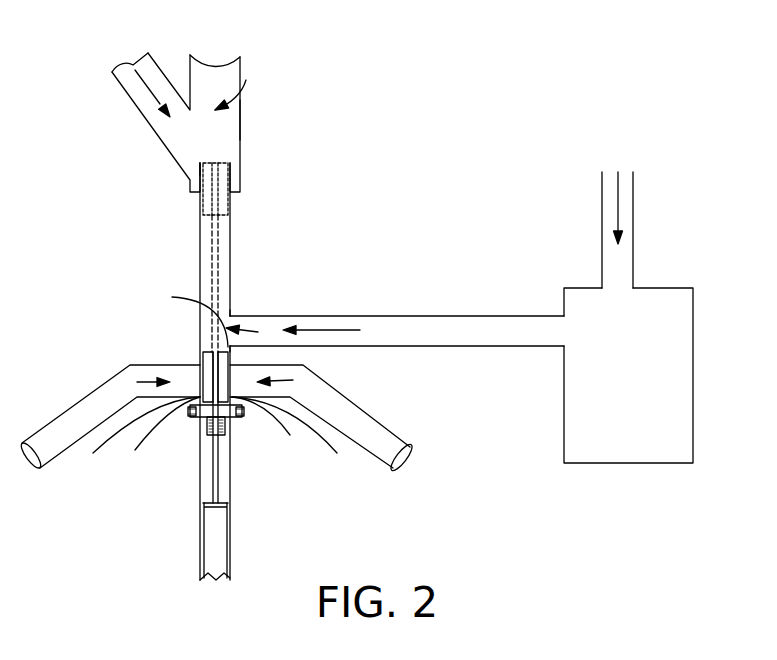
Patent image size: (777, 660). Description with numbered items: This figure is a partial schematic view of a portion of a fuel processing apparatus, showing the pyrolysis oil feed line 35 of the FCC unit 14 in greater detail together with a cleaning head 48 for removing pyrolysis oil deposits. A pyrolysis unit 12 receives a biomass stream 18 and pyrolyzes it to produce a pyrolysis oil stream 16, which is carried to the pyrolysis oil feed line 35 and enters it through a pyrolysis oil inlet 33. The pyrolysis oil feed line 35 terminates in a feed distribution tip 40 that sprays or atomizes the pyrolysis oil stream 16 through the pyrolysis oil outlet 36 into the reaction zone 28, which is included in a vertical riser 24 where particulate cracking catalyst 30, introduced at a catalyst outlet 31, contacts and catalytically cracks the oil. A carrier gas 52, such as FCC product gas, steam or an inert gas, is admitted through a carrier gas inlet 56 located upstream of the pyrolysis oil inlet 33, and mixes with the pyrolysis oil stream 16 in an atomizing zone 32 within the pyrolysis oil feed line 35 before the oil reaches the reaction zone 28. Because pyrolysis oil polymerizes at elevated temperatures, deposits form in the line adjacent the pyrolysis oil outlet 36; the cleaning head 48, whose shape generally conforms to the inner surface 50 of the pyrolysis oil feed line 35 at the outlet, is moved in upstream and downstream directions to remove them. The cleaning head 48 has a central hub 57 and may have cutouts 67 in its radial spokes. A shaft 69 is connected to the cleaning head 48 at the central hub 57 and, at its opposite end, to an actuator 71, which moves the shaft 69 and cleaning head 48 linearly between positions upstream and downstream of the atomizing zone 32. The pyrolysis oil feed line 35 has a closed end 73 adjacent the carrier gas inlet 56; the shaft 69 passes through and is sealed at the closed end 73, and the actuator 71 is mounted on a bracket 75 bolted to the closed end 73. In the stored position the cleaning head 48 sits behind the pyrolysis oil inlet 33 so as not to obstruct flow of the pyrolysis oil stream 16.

The pyrolysis unit 12 is at (673, 288).
The fluid catalytic cracking (FCC) unit 14 is at (167, 177).
The pyrolysis oil stream 16 is at (343, 330).
The biomass stream 18 is at (620, 190).
The riser 24 is at (240, 116).
The reaction zone 28 is at (250, 87).
The particulate cracking catalyst 30 is at (147, 82).
The catalyst outlet 31 is at (190, 110).
The atomizing zone 32 is at (222, 307).
The pyrolysis oil inlet 33 is at (182, 314).
The pyrolysis oil feed line 35 is at (208, 238).
The pyrolysis oil outlet 36 is at (230, 163).
The feed distribution tip 40 is at (200, 163).
The cleaning head 48 is at (200, 352).
The inner surface 50 is at (223, 238).
The carrier gas 52 is at (143, 378).
The carrier gas inlet 56 is at (216, 440).
The central hub 57 is at (159, 438).
The cutouts 67 is at (270, 431).
The shaft 69 is at (215, 497).
The actuator 71 is at (204, 545).
The closed end 73 is at (236, 405).
The bracket 75 is at (207, 418).